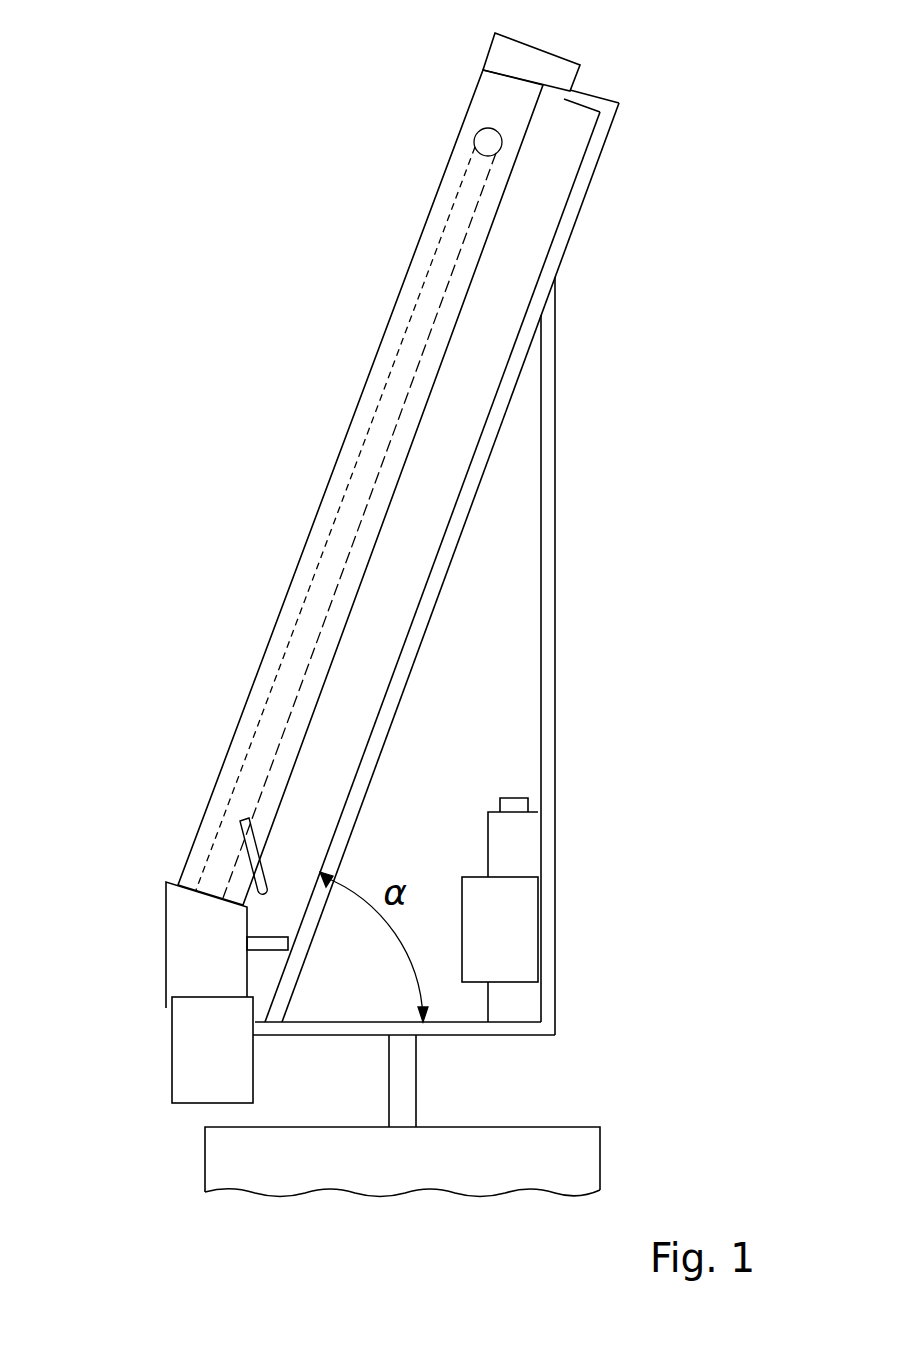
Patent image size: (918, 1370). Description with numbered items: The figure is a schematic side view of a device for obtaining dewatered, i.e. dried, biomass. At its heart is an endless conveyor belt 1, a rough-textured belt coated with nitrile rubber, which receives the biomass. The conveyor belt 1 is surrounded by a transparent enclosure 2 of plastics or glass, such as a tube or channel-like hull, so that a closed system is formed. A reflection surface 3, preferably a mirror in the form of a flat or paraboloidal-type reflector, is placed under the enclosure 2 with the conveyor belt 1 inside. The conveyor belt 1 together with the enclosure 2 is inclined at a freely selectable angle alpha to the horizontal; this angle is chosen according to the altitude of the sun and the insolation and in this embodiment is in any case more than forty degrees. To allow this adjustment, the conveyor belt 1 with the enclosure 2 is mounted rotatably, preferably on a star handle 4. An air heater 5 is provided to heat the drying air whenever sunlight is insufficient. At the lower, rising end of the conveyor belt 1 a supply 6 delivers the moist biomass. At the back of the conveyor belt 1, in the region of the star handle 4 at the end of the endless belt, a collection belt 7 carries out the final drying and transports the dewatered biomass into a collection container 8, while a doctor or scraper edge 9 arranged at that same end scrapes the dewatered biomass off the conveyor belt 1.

The conveyor belt 1 is at (403, 438).
The transparent enclosure 2 is at (495, 96).
The reflection surface 3 is at (572, 207).
The star handle 4 is at (403, 1088).
The air heater 5 is at (510, 927).
The supply 6 is at (192, 943).
The collection belt 7 is at (263, 943).
The collection container 8 is at (192, 1052).
The scraper edge 9 is at (266, 882).